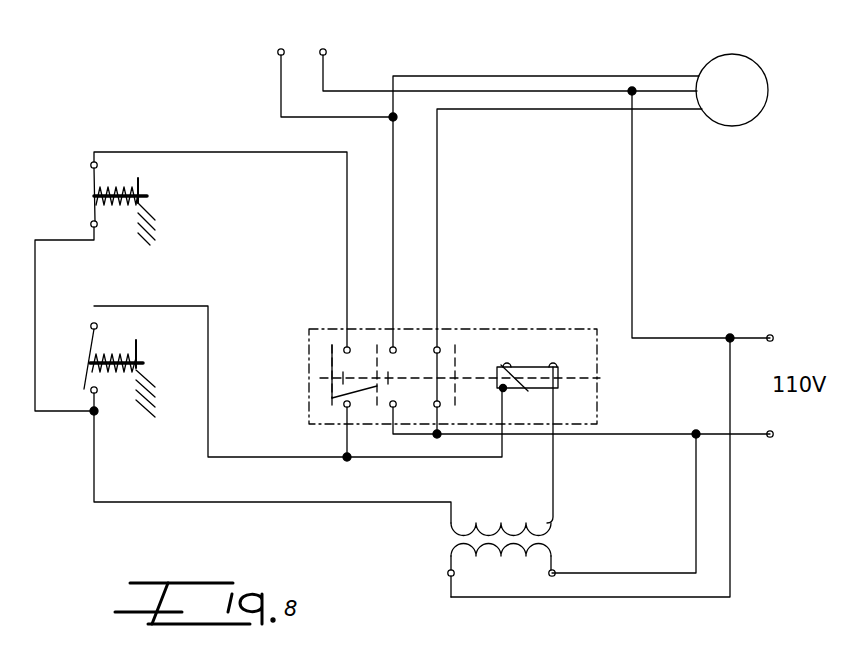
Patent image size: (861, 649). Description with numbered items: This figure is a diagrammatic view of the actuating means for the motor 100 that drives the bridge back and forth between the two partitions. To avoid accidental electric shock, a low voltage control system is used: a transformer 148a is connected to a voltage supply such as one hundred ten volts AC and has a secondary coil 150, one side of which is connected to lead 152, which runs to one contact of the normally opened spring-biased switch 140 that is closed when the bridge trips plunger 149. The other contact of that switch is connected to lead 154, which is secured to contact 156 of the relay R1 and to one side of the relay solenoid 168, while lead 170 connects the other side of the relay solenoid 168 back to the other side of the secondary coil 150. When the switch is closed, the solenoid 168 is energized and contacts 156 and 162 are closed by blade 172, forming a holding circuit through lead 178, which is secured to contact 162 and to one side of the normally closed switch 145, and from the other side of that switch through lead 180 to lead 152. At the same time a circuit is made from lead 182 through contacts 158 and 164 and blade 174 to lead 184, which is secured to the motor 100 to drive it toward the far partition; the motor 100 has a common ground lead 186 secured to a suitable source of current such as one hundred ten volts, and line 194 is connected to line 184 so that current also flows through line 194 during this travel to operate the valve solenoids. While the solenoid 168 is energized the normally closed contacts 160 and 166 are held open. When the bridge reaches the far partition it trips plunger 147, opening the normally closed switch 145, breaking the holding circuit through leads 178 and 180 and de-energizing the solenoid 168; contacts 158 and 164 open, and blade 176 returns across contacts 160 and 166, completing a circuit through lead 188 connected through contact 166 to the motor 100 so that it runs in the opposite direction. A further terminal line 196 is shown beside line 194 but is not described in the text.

The motor 100 is at (762, 72).
The line 194 is at (284, 56).
The terminal 196 is at (326, 64).
The lead 184 is at (523, 75).
The lead 188 is at (527, 110).
The common ground lead 186 is at (634, 186).
The lead 178 is at (171, 152).
The normally closed switch 145 is at (92, 187).
The plunger 147 is at (140, 198).
The lead 180 is at (36, 290).
The normally opened spring-biased switch 140 is at (88, 368).
The plunger 149 is at (144, 358).
The lead 152 is at (272, 503).
The lead 154 is at (238, 458).
The relay R1 is at (537, 329).
The contact 162 is at (349, 346).
The contact 164 is at (396, 346).
The contact 166 is at (440, 346).
The blade 172 is at (330, 358).
The blade 174 is at (332, 397).
The blade 176 is at (441, 371).
The contact 156 is at (349, 408).
The contact 158 is at (395, 407).
The contact 160 is at (440, 407).
The relay solenoid 168 is at (528, 372).
The lead 170 is at (553, 411).
The lead 182 is at (633, 436).
The secondary coil 150 is at (498, 522).
The transformer 148a is at (544, 542).